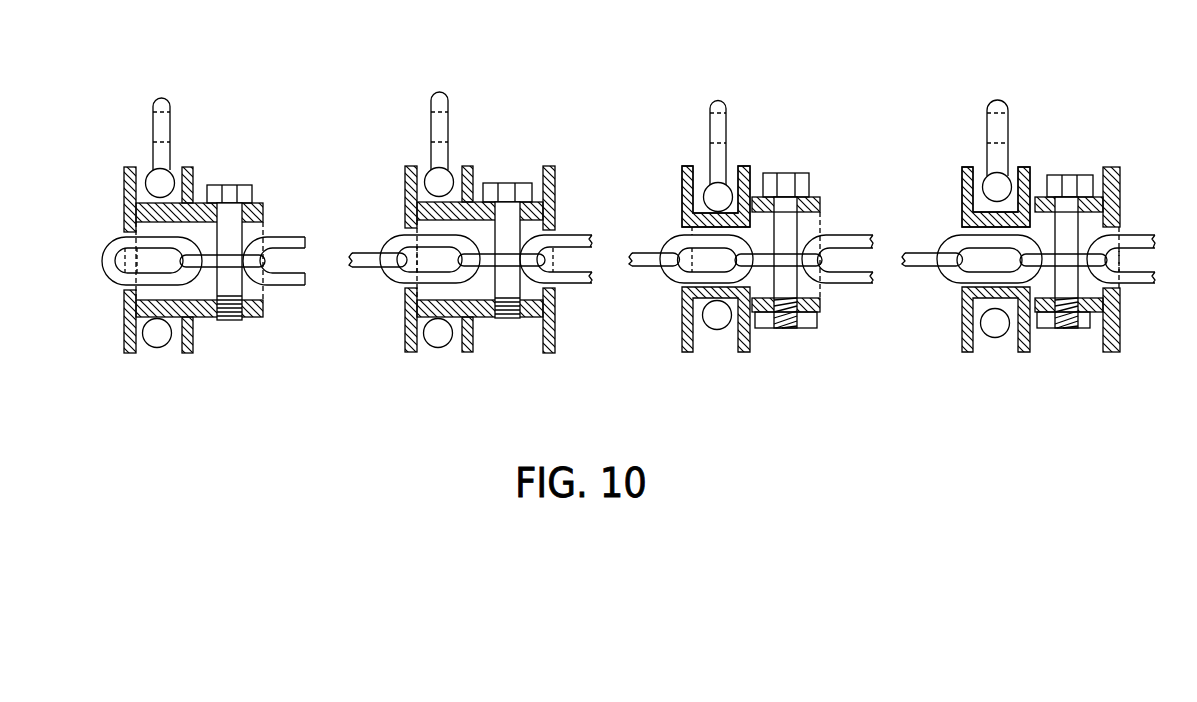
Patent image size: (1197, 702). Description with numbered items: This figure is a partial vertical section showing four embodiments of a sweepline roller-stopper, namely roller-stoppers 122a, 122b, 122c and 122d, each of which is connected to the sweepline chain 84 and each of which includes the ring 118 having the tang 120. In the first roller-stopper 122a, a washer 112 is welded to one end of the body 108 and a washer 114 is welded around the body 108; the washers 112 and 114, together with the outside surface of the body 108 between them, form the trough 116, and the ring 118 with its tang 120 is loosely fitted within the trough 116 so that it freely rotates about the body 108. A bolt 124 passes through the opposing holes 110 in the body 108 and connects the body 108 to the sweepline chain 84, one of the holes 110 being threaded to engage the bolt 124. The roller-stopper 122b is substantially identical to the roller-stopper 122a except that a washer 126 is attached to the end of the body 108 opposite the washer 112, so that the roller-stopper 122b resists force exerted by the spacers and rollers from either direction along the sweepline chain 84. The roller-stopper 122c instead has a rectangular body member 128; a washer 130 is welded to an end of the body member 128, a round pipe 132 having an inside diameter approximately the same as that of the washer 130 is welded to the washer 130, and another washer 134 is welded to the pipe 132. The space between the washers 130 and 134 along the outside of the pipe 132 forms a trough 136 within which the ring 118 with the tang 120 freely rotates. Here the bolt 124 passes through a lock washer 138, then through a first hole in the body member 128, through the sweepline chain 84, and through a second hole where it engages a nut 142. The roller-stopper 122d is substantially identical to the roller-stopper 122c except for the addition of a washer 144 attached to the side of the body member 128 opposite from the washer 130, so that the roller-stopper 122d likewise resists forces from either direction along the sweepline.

The sweepline chain 84 is at (103, 266).
The body 108 is at (256, 314).
The opposing holes 110 is at (262, 224).
The washer 112 is at (123, 318).
The washer 114 is at (193, 343).
The trough 116 is at (176, 156).
The ring 118 is at (157, 347).
The tang 120 is at (172, 107).
The roller-stopper 122a is at (138, 110).
The roller-stopper 122b is at (412, 113).
The roller-stopper 122c is at (687, 117).
The roller-stopper 122d is at (962, 122).
The bolt 124 is at (235, 186).
The washer 126 is at (557, 194).
The rectangular body member 128 is at (818, 313).
The washer 130 is at (750, 172).
The round pipe 132 is at (698, 292).
The washer 134 is at (680, 183).
The trough 136 is at (732, 158).
The lock washer 138 is at (818, 195).
The nut 142 is at (800, 330).
The washer 144 is at (1117, 327).